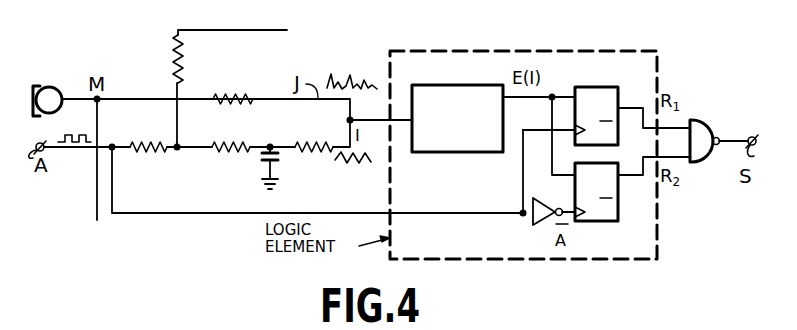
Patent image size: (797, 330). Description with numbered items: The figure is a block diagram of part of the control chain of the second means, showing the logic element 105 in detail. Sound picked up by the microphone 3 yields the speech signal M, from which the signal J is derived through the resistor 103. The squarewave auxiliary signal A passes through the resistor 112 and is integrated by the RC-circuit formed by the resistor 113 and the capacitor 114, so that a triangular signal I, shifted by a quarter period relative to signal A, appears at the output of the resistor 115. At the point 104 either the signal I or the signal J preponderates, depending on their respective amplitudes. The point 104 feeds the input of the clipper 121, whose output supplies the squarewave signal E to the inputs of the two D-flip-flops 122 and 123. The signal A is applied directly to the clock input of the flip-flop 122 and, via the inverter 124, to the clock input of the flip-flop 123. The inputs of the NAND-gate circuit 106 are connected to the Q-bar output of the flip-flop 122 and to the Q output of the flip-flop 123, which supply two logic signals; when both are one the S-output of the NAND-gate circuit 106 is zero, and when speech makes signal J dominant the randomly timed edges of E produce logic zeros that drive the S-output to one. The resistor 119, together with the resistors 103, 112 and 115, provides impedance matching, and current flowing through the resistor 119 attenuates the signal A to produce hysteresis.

The microphone 3 is at (50, 87).
The resistor 103 is at (231, 98).
The point 104 is at (355, 106).
The element 105 is at (647, 80).
The NAND-gate circuit 106 is at (700, 128).
The resistor 112 is at (166, 151).
The resistor of the RC-circuit 113 is at (243, 151).
The capacitor of the RC-circuit 114 is at (279, 161).
The resistor 115 is at (297, 145).
The resistor 119 is at (180, 70).
The clipper 121 is at (450, 98).
The D-flip-flop 122 is at (597, 87).
The D-flip-flop 123 is at (594, 222).
The inverter 124 is at (544, 225).